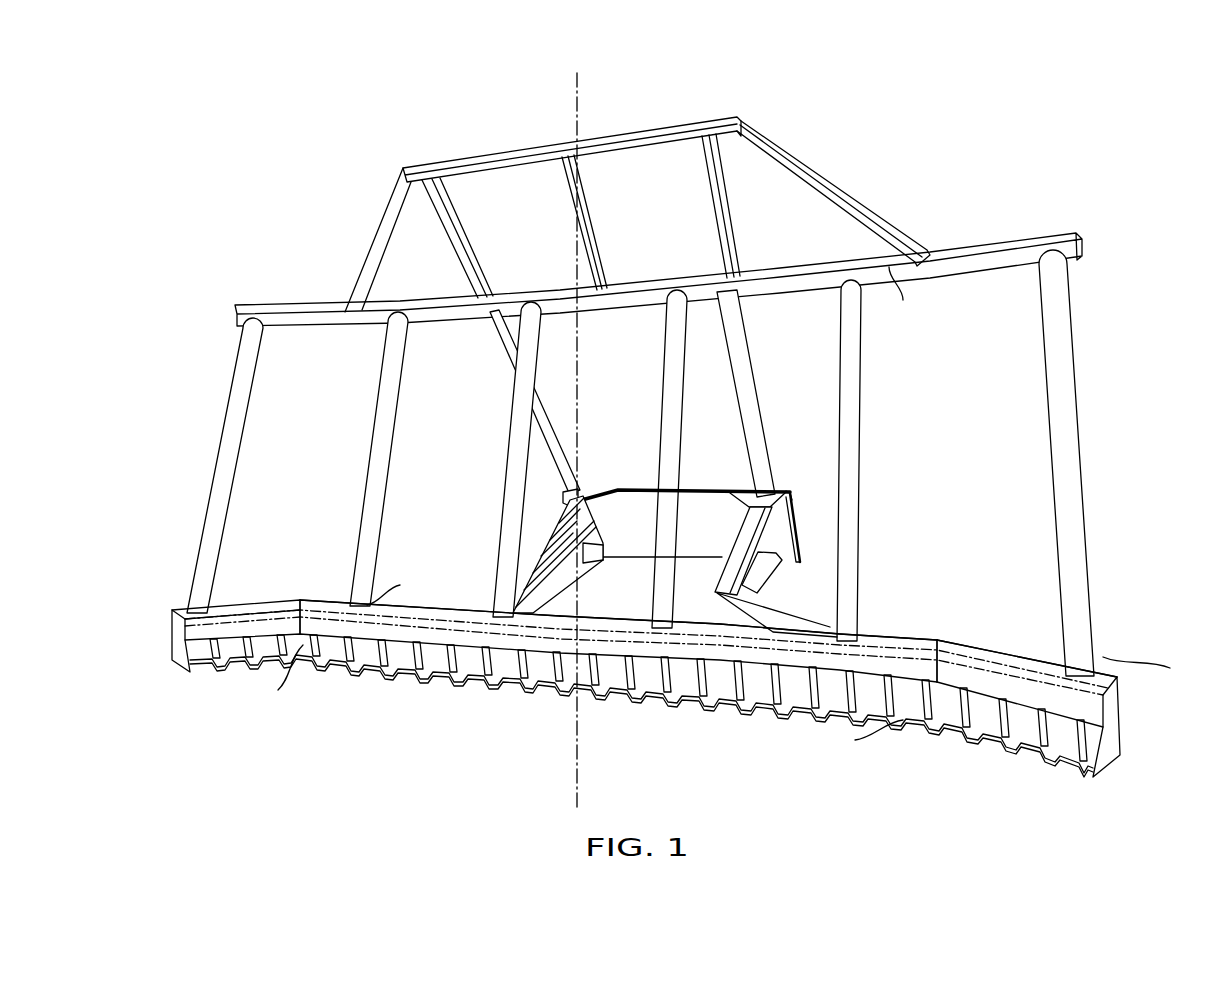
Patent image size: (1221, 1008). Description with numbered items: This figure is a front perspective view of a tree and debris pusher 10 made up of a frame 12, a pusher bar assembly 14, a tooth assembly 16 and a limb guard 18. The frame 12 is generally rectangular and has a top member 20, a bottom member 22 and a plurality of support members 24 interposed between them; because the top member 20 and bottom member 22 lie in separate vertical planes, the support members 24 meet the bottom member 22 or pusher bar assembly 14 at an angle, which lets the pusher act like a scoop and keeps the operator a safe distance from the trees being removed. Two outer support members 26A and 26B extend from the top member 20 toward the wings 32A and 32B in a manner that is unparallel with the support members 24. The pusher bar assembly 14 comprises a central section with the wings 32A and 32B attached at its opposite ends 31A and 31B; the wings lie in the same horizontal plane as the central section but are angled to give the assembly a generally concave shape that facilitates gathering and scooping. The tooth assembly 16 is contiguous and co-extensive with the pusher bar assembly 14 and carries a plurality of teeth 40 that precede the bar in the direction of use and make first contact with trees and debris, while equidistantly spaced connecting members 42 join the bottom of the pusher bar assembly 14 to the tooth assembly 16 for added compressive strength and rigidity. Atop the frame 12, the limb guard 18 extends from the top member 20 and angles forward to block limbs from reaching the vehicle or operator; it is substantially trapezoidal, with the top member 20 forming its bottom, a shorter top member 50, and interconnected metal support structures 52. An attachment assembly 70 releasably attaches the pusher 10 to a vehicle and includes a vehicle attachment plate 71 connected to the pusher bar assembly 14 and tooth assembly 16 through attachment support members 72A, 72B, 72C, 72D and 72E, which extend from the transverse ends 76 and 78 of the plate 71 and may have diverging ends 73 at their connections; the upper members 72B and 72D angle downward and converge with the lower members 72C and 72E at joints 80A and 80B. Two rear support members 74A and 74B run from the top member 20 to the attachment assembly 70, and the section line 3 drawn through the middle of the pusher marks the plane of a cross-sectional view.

The section line 3 is at (548, 810).
The pusher 10 is at (868, 143).
The frame 12 is at (1088, 360).
The pusher bar assembly 14 is at (942, 630).
The tooth assembly 16 is at (919, 736).
The limb guard 18 is at (366, 230).
The top member 20 is at (1010, 238).
The bottom member 22 is at (612, 617).
The support members 24 is at (382, 447).
The outer support member 26A is at (1082, 432).
The outer support member 26B is at (225, 423).
The end of central section 31A is at (993, 657).
The end of central section 31B is at (295, 612).
The wing 32A is at (985, 647).
The wing 32B is at (235, 603).
The teeth 40 is at (560, 700).
The connecting members 42 is at (527, 667).
The top member of limb guard 50 is at (487, 158).
The support structures 52 is at (382, 262).
The attachment assembly 70 is at (594, 479).
The vehicle attachment plate 71 is at (703, 490).
The upper attachment support member 72A is at (803, 615).
The upper attachment support member 72B is at (773, 522).
The lower attachment support member 72C is at (773, 568).
The upper attachment support member 72D is at (527, 538).
The lower attachment support member 72E is at (590, 548).
The diverging ends 73 is at (781, 492).
The rear support member 74A is at (740, 333).
The rear support member 74B is at (497, 338).
The transverse end of vehicle attachment plate 76 is at (793, 495).
The transverse end of vehicle attachment plate 78 is at (540, 503).
The joint 80A is at (407, 670).
The joint 80B is at (680, 693).